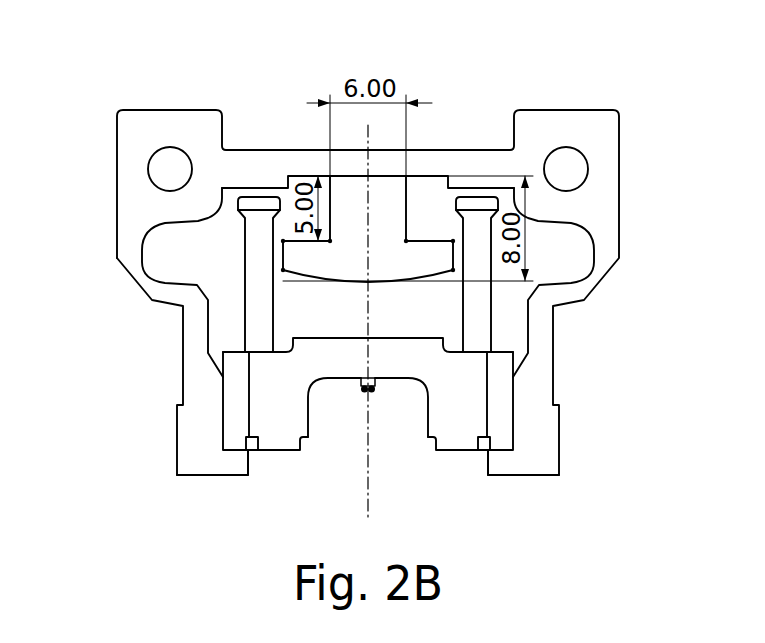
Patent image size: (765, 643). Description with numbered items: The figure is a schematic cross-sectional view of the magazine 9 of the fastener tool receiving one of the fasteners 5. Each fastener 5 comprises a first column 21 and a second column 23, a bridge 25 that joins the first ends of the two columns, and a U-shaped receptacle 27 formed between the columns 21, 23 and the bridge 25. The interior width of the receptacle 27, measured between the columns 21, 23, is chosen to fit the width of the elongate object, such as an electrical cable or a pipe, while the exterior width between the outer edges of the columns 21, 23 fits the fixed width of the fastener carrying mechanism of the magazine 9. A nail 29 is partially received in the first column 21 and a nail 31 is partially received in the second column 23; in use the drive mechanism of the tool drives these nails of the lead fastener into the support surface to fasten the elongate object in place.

The magazine 9 is at (114, 104).
The nail 31 is at (253, 272).
The nail 29 is at (493, 305).
The bridge 25 is at (343, 360).
The second column 23 is at (232, 437).
The first column 21 is at (488, 393).
The U-shaped receptacle 27 is at (341, 424).
The fastener 5 is at (261, 468).